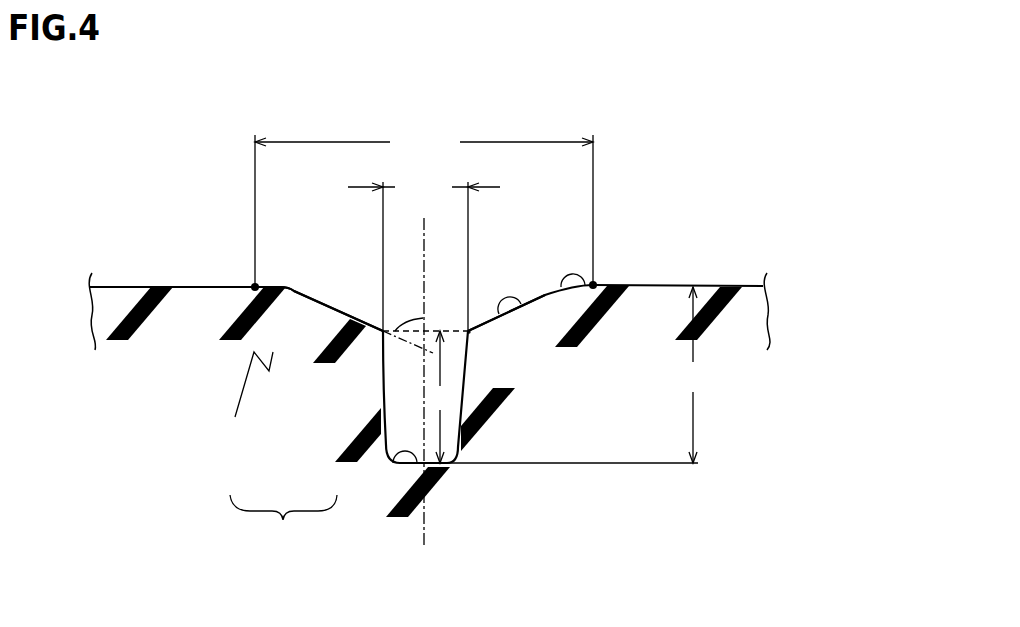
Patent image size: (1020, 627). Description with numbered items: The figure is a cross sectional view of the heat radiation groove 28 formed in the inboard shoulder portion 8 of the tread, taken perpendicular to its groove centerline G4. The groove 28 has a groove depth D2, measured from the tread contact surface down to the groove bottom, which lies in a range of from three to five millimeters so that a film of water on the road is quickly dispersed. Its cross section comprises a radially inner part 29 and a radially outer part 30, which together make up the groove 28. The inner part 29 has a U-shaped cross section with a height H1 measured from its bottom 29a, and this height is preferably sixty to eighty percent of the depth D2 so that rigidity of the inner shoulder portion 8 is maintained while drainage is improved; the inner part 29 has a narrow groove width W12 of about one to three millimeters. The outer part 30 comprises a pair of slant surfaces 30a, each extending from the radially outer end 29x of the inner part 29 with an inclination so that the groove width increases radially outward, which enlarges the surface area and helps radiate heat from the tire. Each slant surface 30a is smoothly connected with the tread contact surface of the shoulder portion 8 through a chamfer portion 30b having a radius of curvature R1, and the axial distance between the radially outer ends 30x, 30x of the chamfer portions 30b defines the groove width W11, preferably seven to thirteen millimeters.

The inboard shoulder portion 8 is at (160, 287).
The radially outer end of the chamfer portion 30x is at (255, 285).
The radially inner part 29 is at (402, 358).
The radially outer part 30 is at (347, 300).
The heat radiation groove 28 is at (283, 524).
The bottom of the inner part 29a is at (392, 457).
The radially outer end of the inner part 29x is at (470, 332).
The slant surface 30a is at (523, 303).
The chamfer portion 30b is at (587, 285).
The radius of curvature of the chamfer portion R1 is at (288, 292).
The groove width W11 is at (424, 208).
The groove width of the inner part W12 is at (424, 252).
The height of the inner part H1 is at (440, 397).
The groove depth D2 is at (578, 375).
The groove centerline G4 is at (424, 505).